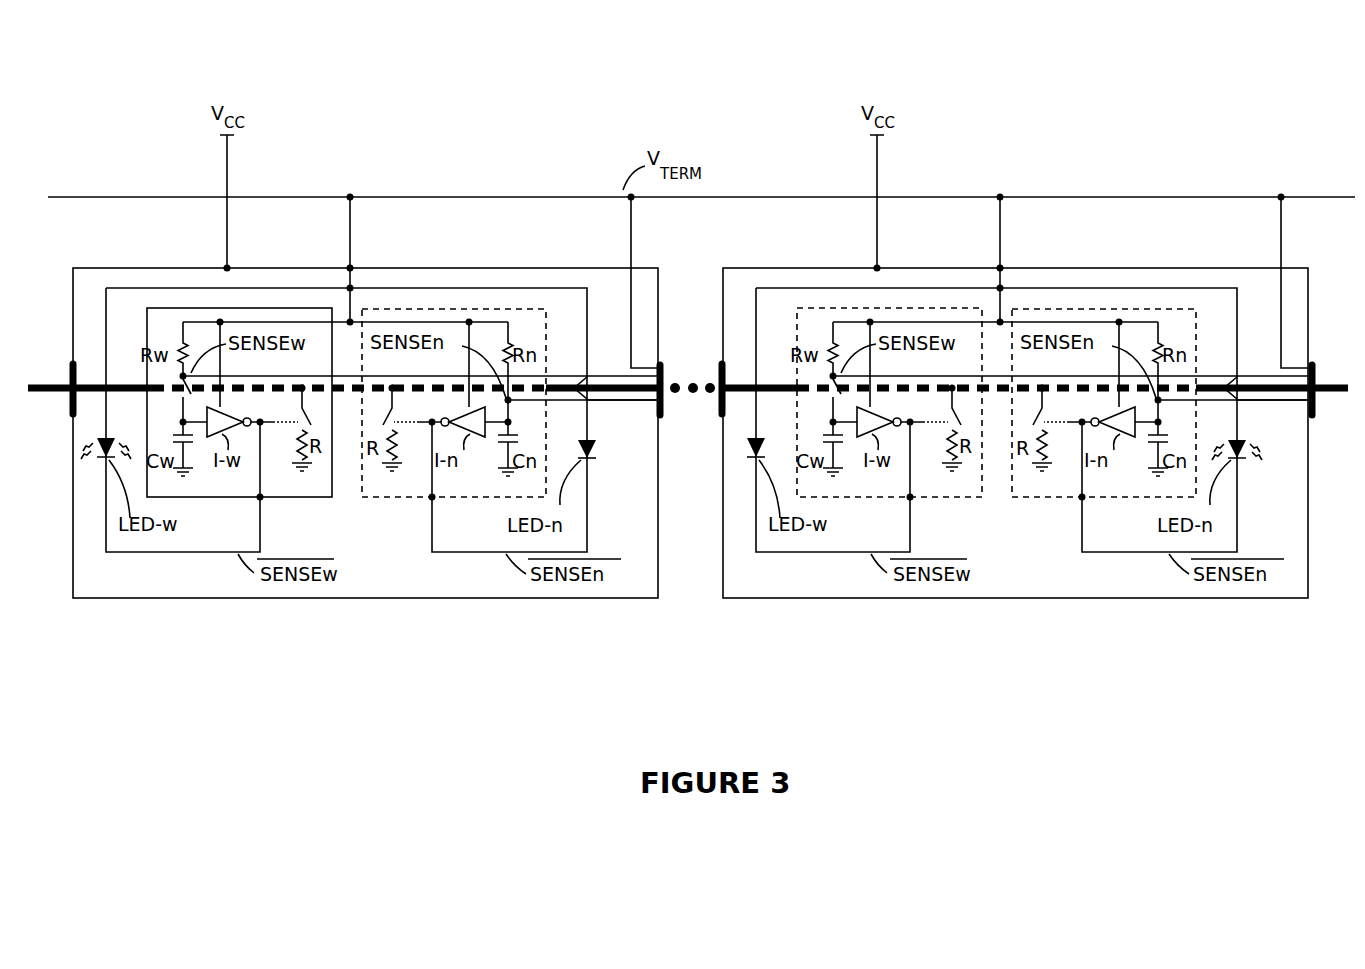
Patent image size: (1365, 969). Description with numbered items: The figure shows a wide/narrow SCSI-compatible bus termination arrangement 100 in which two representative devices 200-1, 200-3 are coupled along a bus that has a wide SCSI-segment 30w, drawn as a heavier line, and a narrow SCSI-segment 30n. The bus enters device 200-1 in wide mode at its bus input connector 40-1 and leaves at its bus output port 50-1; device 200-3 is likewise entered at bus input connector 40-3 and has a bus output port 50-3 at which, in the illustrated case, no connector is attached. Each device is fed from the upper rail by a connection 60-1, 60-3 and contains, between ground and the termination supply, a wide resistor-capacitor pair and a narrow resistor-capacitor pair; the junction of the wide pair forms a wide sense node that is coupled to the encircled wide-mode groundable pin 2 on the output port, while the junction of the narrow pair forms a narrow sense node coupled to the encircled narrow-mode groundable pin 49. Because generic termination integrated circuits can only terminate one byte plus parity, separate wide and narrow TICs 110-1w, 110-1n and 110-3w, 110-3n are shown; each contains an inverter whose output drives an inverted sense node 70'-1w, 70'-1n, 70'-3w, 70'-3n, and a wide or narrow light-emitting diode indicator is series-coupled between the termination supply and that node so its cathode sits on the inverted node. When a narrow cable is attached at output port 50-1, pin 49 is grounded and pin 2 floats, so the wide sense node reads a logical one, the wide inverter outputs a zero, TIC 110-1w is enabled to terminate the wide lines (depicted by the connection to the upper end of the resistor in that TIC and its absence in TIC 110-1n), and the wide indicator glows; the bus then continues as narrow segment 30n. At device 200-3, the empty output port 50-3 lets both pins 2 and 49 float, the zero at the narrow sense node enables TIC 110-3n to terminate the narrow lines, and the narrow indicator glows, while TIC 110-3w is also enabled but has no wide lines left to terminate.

The wide/narrow SCSI-compatible bus termination arrangement 100 is at (137, 85).
The wide/narrow bus compatible device 200-1 is at (130, 268).
The wide/narrow bus compatible device 200-3 is at (780, 268).
The supply line of first module 60-1 is at (355, 268).
The supply line of third module 60-3 is at (1005, 268).
The wide termination integrated circuit 110-1w is at (164, 309).
The narrow termination integrated circuit 110-1n is at (470, 309).
The wide termination integrated circuit 110-3w is at (814, 309).
The narrow termination integrated circuit 110-3n is at (1120, 309).
The bus input connector 40-1 is at (69, 381).
The bus input connector 40-3 is at (714, 398).
The bus output port 50-1 is at (667, 366).
The bus output port 50-3 is at (1318, 364).
The wide SCSI-segment 30w is at (48, 398).
The narrow SCSI-segment 30n is at (1340, 396).
The inverted wide sense node 70'-1w is at (292, 480).
The inverted narrow sense node 70'-1n is at (394, 480).
The inverted wide sense node 70'-3w is at (942, 480).
The inverted narrow sense node 70'-3n is at (1044, 480).
The wide-mode groundable pin 2 is at (621, 372).
The narrow-mode groundable pin 49 is at (607, 401).